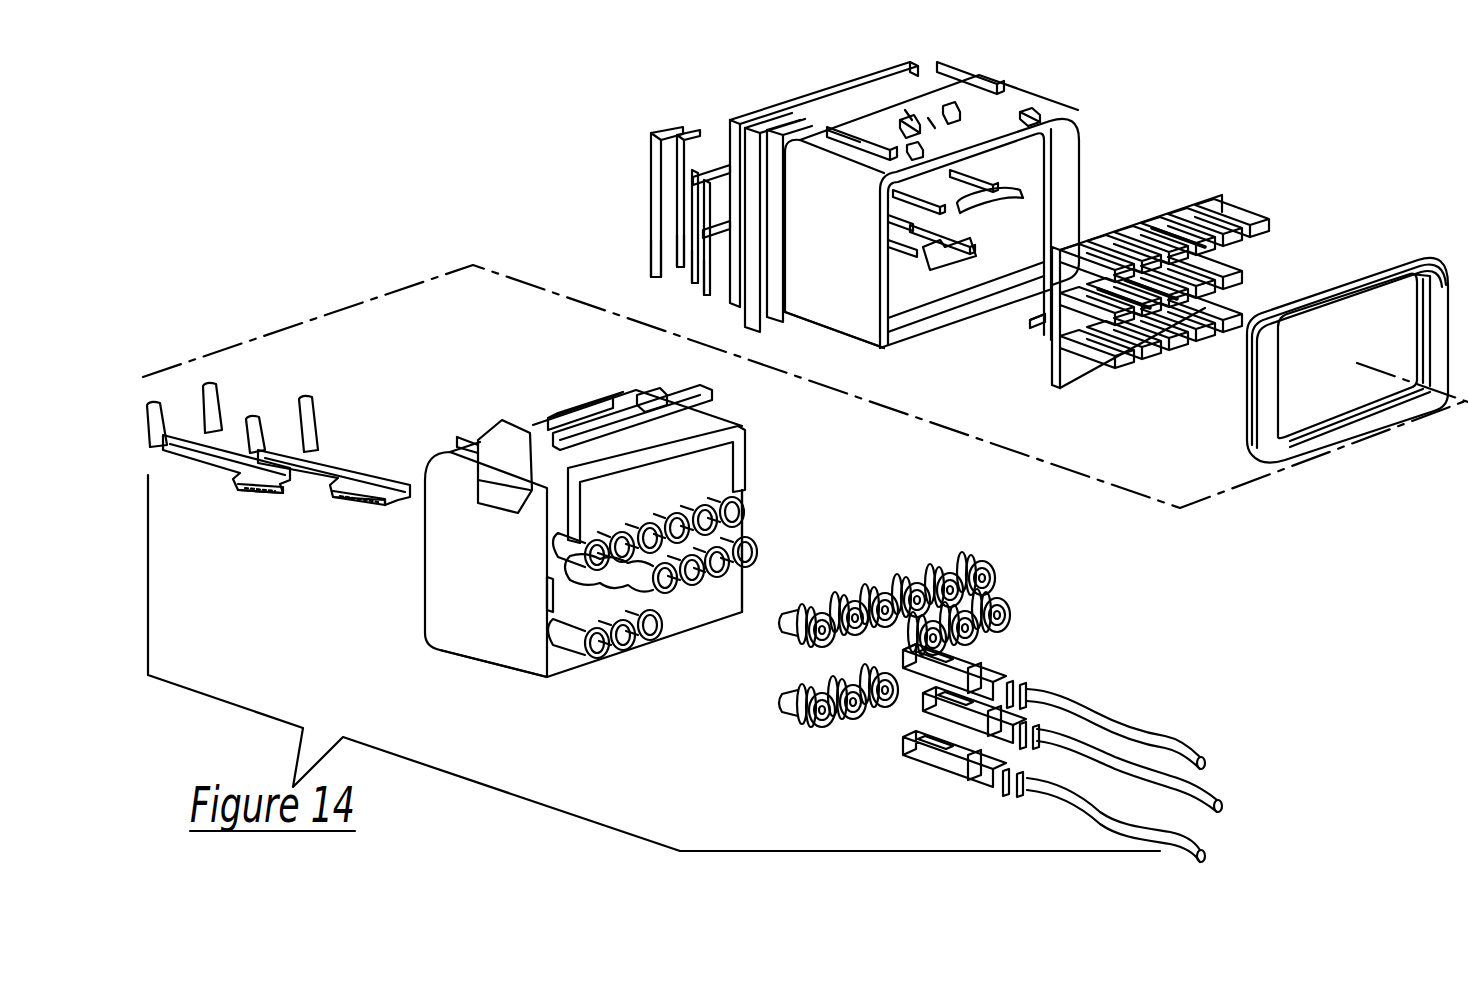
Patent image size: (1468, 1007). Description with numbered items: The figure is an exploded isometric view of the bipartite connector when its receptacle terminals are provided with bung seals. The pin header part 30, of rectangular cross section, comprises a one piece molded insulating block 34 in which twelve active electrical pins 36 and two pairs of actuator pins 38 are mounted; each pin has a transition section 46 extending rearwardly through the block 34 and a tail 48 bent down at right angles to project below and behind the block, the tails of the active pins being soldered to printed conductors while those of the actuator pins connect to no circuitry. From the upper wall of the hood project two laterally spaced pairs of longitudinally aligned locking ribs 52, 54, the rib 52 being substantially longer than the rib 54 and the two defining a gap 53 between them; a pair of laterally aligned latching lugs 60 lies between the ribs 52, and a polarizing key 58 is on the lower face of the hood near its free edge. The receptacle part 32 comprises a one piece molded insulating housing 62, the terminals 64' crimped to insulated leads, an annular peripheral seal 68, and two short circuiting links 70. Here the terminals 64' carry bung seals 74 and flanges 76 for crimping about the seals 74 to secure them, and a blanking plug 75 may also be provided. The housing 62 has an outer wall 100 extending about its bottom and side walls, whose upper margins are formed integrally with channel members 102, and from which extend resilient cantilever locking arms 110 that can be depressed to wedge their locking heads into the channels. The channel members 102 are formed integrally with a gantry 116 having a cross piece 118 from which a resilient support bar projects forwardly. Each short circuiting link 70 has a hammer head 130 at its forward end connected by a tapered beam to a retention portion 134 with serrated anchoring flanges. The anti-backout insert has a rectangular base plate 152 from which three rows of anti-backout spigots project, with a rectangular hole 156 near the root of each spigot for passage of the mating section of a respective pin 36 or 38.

The pin header part 30 is at (1094, 118).
The receptacle part 32 is at (512, 685).
The insulating block 34 is at (788, 322).
The active electrical pins 36 is at (968, 205).
The actuator pins 38 is at (928, 190).
The transition section 46 is at (738, 135).
The tail 48 is at (655, 228).
The locking rib 52 is at (975, 100).
The gap 53 is at (858, 150).
The locking rib 54 is at (1032, 112).
The polarizing key 58 is at (1040, 320).
The latching lugs 60 is at (930, 118).
The insulating housing 62 is at (599, 392).
The receptacle terminals 64' is at (1113, 746).
The annular peripheral seal 68 is at (1246, 388).
The short circuiting links 70 is at (278, 454).
The bung seals 74 is at (872, 582).
The blanking plug 75 is at (903, 652).
The flanges 76 is at (918, 724).
The outer wall 100 is at (512, 594).
The channel member 102 is at (614, 403).
The resilient cantilever locking arm 110 is at (502, 450).
The gantry 116 is at (748, 485).
The cross piece 118 is at (712, 428).
The hammer head 130 is at (307, 410).
The retention portion 134 is at (301, 488).
The base plate 152 is at (1134, 307).
The rectangular hole 156 is at (1062, 272).